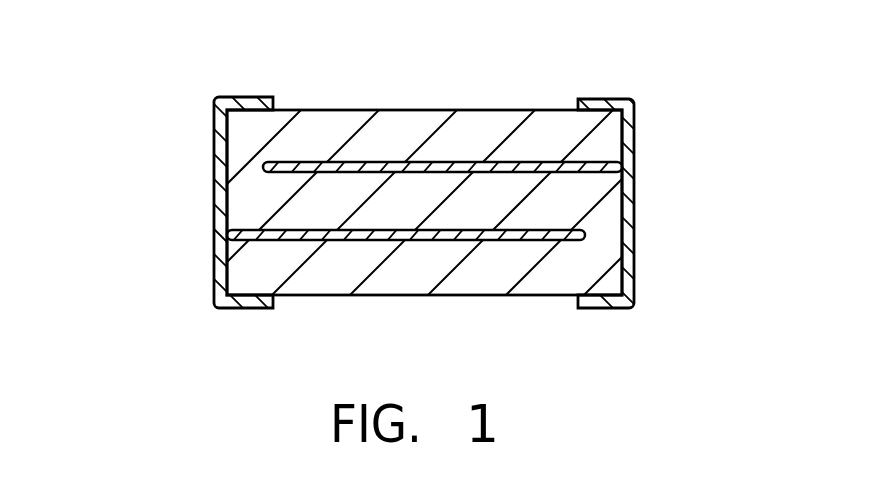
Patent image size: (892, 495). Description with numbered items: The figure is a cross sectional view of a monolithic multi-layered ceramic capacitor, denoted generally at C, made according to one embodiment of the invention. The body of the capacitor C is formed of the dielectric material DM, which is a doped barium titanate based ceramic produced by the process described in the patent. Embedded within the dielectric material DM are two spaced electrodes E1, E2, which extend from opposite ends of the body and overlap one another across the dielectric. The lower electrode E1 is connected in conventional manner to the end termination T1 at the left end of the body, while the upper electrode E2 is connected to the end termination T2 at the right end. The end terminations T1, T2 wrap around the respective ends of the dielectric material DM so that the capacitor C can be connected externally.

The dielectric material DM is at (317, 130).
The electrode E1 is at (505, 243).
The electrode E2 is at (453, 162).
The end termination T1 is at (215, 192).
The end termination T2 is at (635, 182).
The multilayer ceramic capacitor C is at (185, 290).